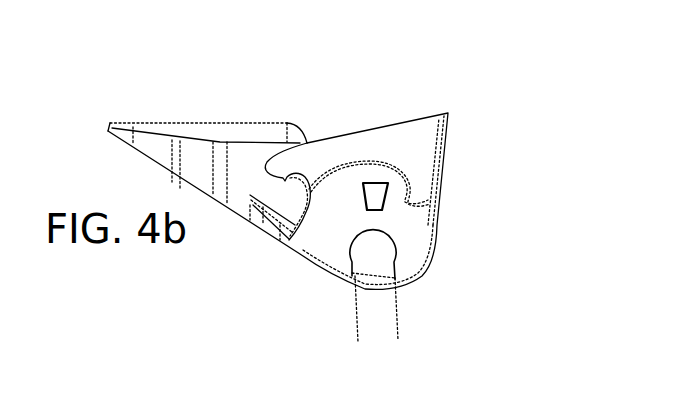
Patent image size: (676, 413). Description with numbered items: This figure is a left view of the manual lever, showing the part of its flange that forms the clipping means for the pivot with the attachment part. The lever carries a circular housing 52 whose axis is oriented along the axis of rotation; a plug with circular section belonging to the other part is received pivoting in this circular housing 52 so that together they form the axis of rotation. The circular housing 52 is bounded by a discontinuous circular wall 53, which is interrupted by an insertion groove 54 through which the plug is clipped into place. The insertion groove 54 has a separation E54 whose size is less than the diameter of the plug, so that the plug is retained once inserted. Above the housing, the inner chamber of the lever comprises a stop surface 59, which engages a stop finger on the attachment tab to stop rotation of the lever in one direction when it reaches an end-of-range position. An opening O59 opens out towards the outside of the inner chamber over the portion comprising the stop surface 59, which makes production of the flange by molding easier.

The circular housing 52 is at (405, 242).
The discontinuous circular wall 53 is at (340, 250).
The insertion groove 54 is at (360, 274).
The separation E54 is at (432, 332).
The stop surface 59 is at (395, 207).
The opening O59 is at (350, 190).